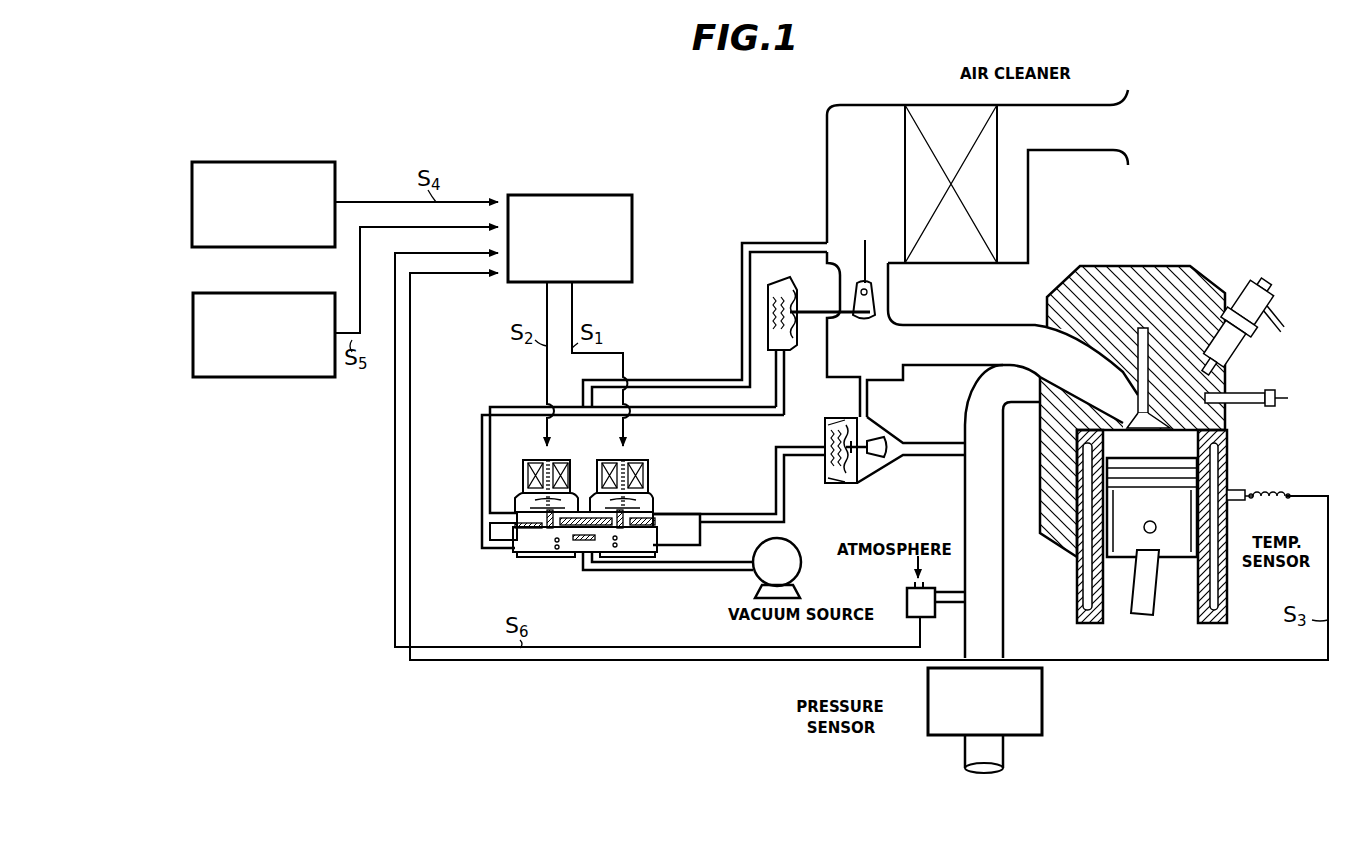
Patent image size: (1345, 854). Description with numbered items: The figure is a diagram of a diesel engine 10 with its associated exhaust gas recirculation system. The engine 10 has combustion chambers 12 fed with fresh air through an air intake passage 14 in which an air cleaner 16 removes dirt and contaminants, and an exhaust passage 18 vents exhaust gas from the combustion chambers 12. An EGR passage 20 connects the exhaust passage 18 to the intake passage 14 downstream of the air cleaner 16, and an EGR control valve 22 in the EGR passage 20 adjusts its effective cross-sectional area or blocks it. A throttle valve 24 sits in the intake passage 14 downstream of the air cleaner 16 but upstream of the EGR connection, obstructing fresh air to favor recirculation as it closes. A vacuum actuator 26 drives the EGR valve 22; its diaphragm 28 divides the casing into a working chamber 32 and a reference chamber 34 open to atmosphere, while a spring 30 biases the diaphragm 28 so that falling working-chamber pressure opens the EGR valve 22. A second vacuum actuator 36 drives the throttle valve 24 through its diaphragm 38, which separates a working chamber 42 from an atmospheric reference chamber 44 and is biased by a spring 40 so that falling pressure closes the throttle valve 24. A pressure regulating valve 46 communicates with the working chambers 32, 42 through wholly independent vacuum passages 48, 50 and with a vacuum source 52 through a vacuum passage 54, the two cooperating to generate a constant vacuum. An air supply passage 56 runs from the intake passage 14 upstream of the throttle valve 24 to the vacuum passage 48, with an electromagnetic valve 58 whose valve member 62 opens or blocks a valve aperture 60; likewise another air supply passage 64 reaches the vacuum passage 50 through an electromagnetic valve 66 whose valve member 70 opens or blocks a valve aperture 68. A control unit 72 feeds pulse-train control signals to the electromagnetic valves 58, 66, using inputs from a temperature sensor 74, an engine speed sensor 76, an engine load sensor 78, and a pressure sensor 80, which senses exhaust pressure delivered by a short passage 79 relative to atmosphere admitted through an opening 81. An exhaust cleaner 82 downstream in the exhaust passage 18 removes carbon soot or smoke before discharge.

The diesel engine 10 is at (1162, 258).
The combustion chambers 12 is at (1228, 432).
The air intake passage 14 is at (973, 323).
The air cleaner 16 is at (943, 103).
The exhaust passage 18 is at (1005, 540).
The exhaust gas recirculation passage 20 is at (920, 441).
The EGR control valve 22 is at (888, 460).
The throttle valve 24 is at (866, 262).
The vacuum actuator 26 is at (835, 458).
The diaphragm 28 is at (842, 428).
The spring 30 is at (832, 470).
The working chamber 32 is at (826, 432).
The reference chamber 34 is at (857, 480).
The vacuum actuator 36 is at (760, 301).
The diaphragm 38 is at (790, 352).
The spring 40 is at (770, 298).
The working chamber 42 is at (772, 318).
The reference chamber 44 is at (800, 312).
The pressure regulating valve 46 is at (581, 513).
The vacuum passage 48 is at (702, 532).
The vacuum passage 50 is at (498, 553).
The vacuum source 52 is at (757, 580).
The vacuum passage 54 is at (635, 571).
The air supply passage 56 is at (690, 512).
The electromagnetic valve 58 is at (655, 466).
The valve aperture 60 is at (648, 500).
The valve member 62 is at (618, 465).
The air supply passage 64 is at (490, 530).
The electromagnetic valve 66 is at (510, 467).
The valve aperture 68 is at (515, 503).
The valve member 70 is at (540, 465).
The control unit 72 is at (633, 205).
The temperature sensor 74 is at (1240, 500).
The engine speed sensor 76 is at (308, 161).
The engine load sensor 78 is at (305, 378).
The short passage 79 is at (948, 604).
The pressure sensor 80 is at (907, 612).
The opening 81 is at (912, 583).
The exhaust cleaner 82 is at (1043, 712).